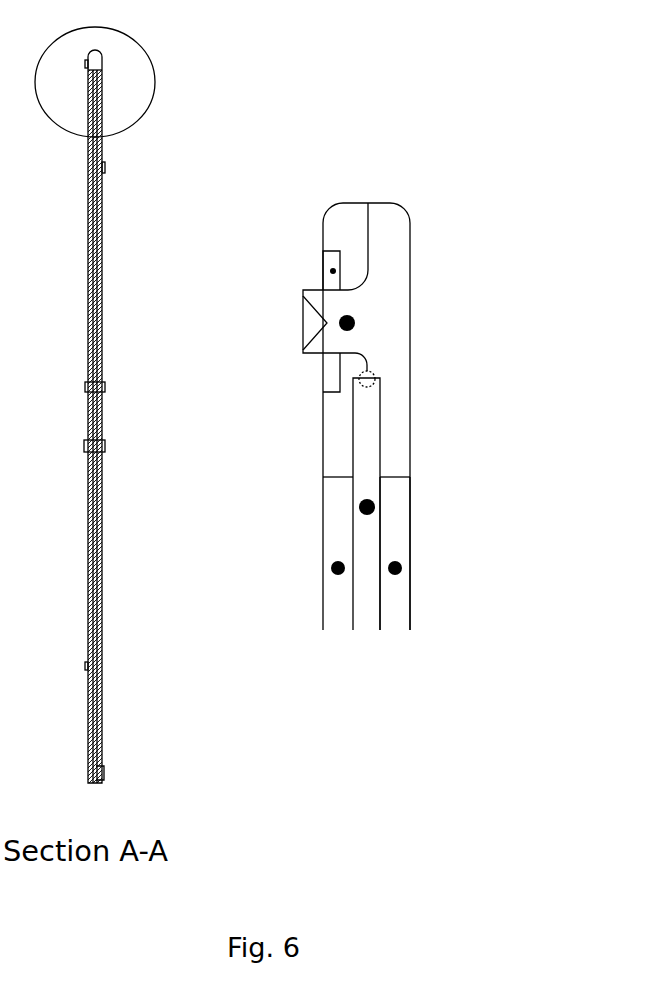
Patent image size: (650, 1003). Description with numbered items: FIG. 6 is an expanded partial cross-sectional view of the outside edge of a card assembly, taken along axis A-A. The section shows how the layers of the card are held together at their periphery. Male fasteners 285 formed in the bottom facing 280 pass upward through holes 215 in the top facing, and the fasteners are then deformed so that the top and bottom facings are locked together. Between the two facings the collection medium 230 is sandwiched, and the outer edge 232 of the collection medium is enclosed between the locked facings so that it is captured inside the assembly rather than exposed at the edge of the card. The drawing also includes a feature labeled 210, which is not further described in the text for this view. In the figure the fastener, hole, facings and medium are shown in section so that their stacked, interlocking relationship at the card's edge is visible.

The outer tubular wall 210 is at (331, 568).
The holes 215 is at (330, 270).
The collection medium 230 is at (359, 507).
The outer edge 232 is at (375, 379).
The bottom facing 280 is at (402, 568).
The male fasteners 285 is at (355, 323).